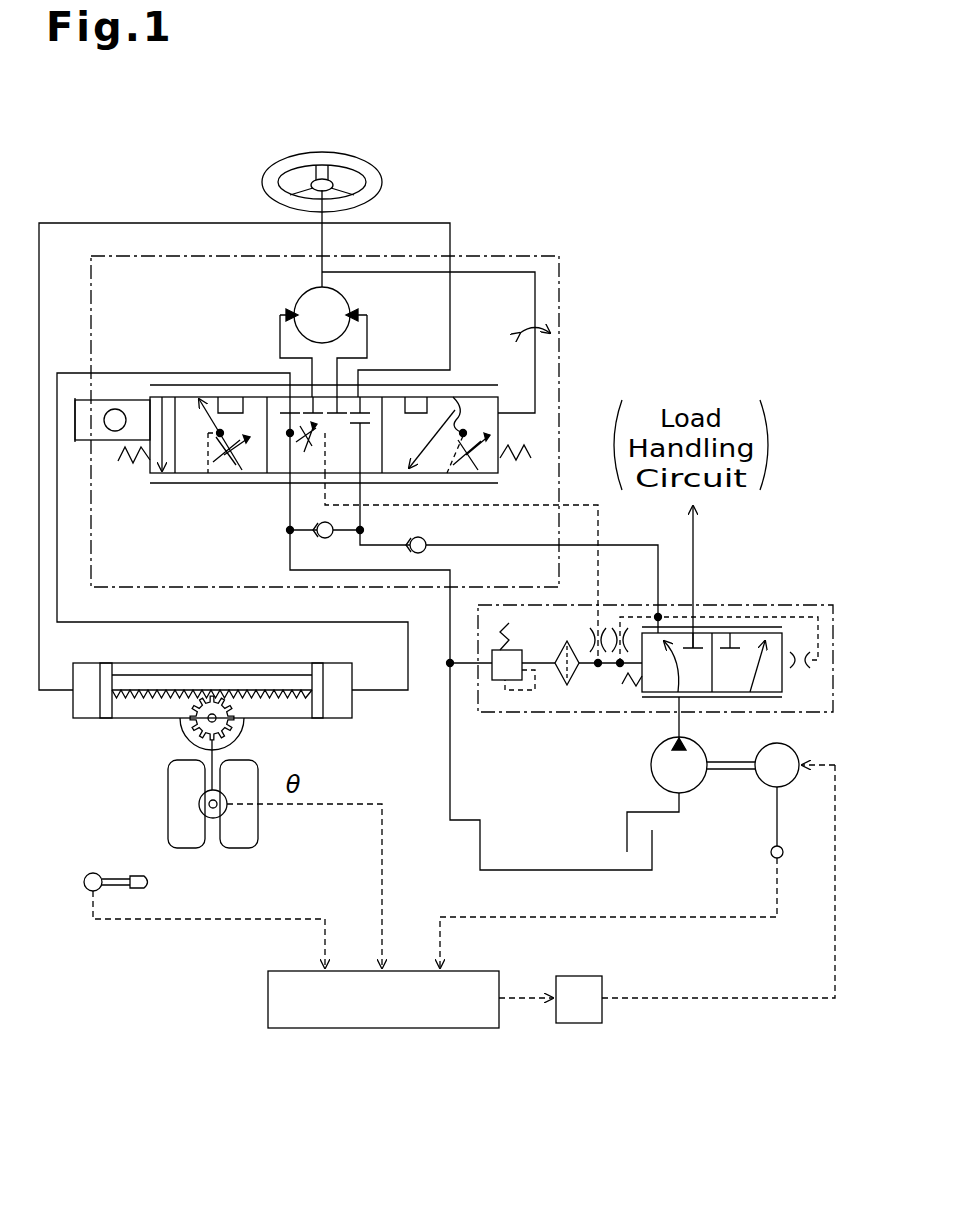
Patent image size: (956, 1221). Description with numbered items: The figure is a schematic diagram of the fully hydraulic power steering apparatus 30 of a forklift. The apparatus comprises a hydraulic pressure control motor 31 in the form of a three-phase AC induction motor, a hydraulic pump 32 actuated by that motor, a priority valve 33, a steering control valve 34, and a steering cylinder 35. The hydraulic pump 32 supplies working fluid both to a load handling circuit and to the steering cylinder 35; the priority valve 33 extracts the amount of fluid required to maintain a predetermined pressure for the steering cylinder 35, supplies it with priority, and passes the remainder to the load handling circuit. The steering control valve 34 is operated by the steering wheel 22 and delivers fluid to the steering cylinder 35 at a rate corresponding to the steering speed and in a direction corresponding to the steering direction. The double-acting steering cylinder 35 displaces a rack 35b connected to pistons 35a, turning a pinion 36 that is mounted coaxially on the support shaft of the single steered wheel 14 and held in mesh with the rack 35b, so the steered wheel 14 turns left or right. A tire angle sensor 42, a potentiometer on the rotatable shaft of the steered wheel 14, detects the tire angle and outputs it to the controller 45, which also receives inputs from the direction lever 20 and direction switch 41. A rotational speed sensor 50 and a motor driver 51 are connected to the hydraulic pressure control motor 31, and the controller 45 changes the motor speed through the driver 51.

The steered wheel 14 is at (235, 848).
The direction lever 20 is at (151, 882).
The steering wheel 22 is at (382, 182).
The power steering apparatus 30 is at (664, 241).
The hydraulic pressure control motor 31 is at (781, 744).
The hydraulic pump 32 is at (700, 786).
The priority valve 33 is at (760, 591).
The steering control valve 34 is at (478, 256).
The steering cylinder 35 is at (340, 718).
The pistons 35a is at (110, 663).
The rack 35b is at (207, 682).
The pinion 36 is at (184, 712).
The direction switch 41 is at (86, 880).
The tire angle sensor 42 is at (200, 800).
The controller 45 is at (463, 971).
The hydraulic pressure control motor rotational speed sensor 50 is at (783, 852).
The hydraulic pressure control motor driver 51 is at (578, 976).